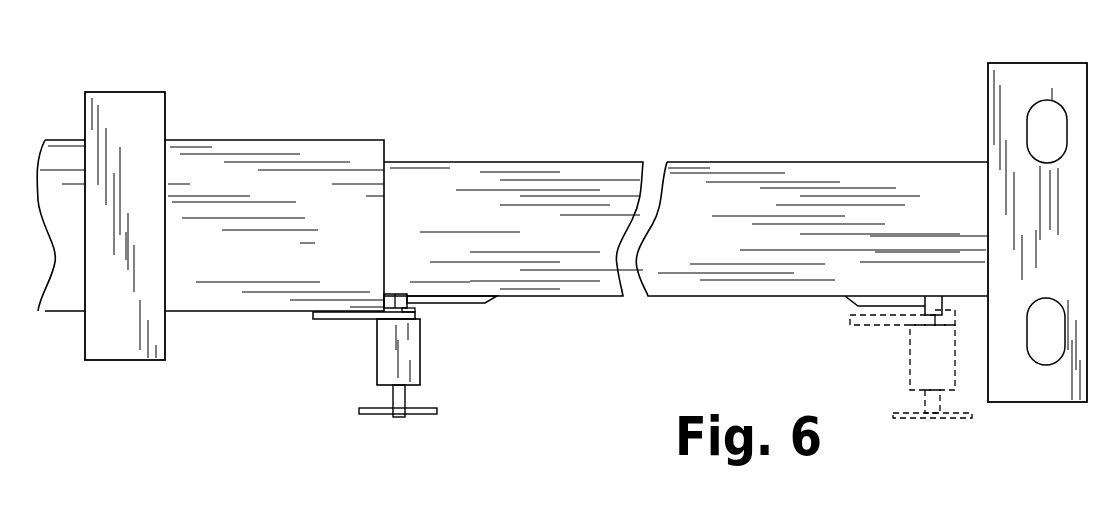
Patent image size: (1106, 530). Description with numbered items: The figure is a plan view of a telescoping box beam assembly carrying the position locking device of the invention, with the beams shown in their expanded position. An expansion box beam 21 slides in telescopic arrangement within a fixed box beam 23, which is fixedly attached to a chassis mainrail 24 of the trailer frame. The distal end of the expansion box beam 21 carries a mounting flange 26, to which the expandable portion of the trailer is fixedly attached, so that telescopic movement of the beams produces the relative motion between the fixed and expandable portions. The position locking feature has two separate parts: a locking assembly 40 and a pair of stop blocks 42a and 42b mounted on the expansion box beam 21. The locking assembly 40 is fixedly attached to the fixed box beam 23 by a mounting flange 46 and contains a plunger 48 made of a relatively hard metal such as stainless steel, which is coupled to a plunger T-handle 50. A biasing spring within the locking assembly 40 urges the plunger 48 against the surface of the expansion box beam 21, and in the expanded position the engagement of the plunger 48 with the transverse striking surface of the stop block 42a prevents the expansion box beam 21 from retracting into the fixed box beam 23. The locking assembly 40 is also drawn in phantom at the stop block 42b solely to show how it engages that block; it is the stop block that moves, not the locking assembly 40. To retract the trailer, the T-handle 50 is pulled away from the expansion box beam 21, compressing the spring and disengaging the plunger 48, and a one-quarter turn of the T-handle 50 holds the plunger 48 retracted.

The expansion box beam 21 is at (530, 161).
The fixed box beam 23 is at (330, 140).
The chassis mainrail 24 is at (150, 92).
The mounting flange 26 is at (1012, 63).
The locking assembly 40 is at (421, 350).
The stop block 42a is at (430, 305).
The stop block 42b is at (880, 310).
The mounting flange 46 is at (337, 320).
The plunger 48 is at (397, 293).
The plunger T-handle 50 is at (422, 417).